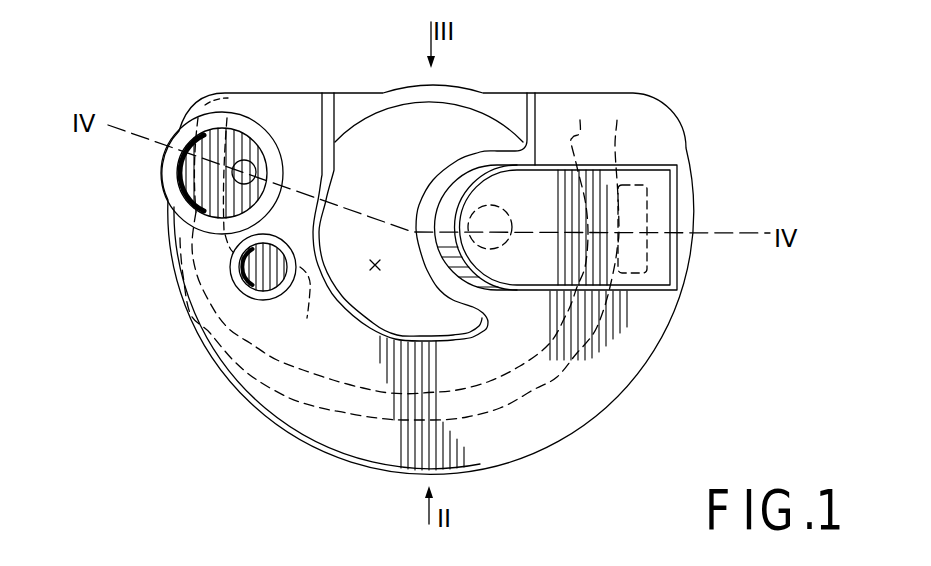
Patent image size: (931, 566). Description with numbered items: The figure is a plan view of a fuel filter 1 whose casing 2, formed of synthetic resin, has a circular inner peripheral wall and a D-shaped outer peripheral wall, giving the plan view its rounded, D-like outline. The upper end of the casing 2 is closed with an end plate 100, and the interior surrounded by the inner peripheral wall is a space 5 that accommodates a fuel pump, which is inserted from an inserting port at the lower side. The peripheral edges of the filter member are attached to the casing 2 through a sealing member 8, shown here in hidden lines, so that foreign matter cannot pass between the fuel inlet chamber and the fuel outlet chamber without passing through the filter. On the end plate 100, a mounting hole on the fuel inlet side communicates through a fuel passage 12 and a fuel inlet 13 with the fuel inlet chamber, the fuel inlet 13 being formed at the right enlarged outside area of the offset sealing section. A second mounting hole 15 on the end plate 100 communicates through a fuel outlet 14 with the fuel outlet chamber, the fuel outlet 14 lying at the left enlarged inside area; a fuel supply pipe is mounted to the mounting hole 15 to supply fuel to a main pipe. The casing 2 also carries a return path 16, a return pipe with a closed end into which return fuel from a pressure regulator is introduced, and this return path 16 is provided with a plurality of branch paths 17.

The fuel filter 1 is at (657, 68).
The casing 2 is at (648, 126).
The space 5 is at (375, 268).
The sealing member 8 is at (533, 375).
The fuel passage 12 is at (512, 213).
The fuel inlet 13 is at (647, 205).
The fuel outlet 14 is at (245, 160).
The mounting hole 15 is at (178, 178).
The return path 16 is at (250, 293).
The branch paths 17 is at (228, 263).
The end plate 100 is at (633, 345).